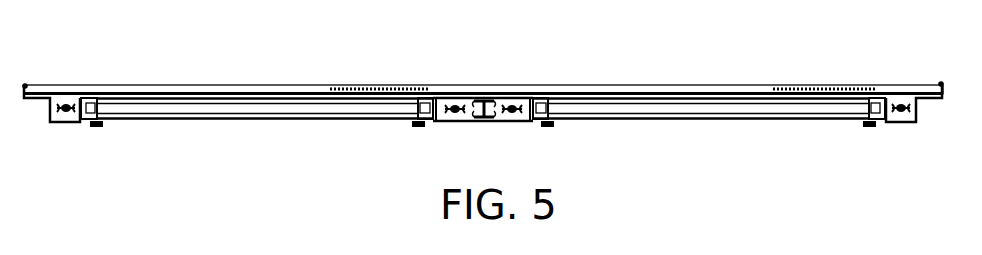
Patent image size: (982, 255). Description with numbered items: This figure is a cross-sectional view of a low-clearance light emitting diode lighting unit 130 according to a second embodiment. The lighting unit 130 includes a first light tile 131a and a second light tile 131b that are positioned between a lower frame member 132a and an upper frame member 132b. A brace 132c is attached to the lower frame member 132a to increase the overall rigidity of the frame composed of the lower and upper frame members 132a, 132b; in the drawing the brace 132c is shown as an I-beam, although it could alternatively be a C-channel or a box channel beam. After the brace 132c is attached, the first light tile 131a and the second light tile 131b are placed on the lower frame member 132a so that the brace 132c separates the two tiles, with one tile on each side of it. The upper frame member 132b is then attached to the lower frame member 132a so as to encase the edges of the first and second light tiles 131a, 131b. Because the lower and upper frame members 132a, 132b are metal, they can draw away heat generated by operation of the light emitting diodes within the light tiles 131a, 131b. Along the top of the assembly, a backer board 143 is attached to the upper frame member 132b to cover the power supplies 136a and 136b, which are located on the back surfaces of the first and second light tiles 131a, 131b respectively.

The low-clearance light emitting diode lighting unit 130 is at (68, 73).
The backer board 143 is at (253, 85).
The power supply 136a is at (381, 86).
The power supply 136b is at (822, 86).
The first light tile 131a is at (435, 135).
The second light tile 131b is at (881, 135).
The lower frame member 132a is at (903, 117).
The upper frame member 132b is at (632, 86).
The brace 132c is at (486, 96).